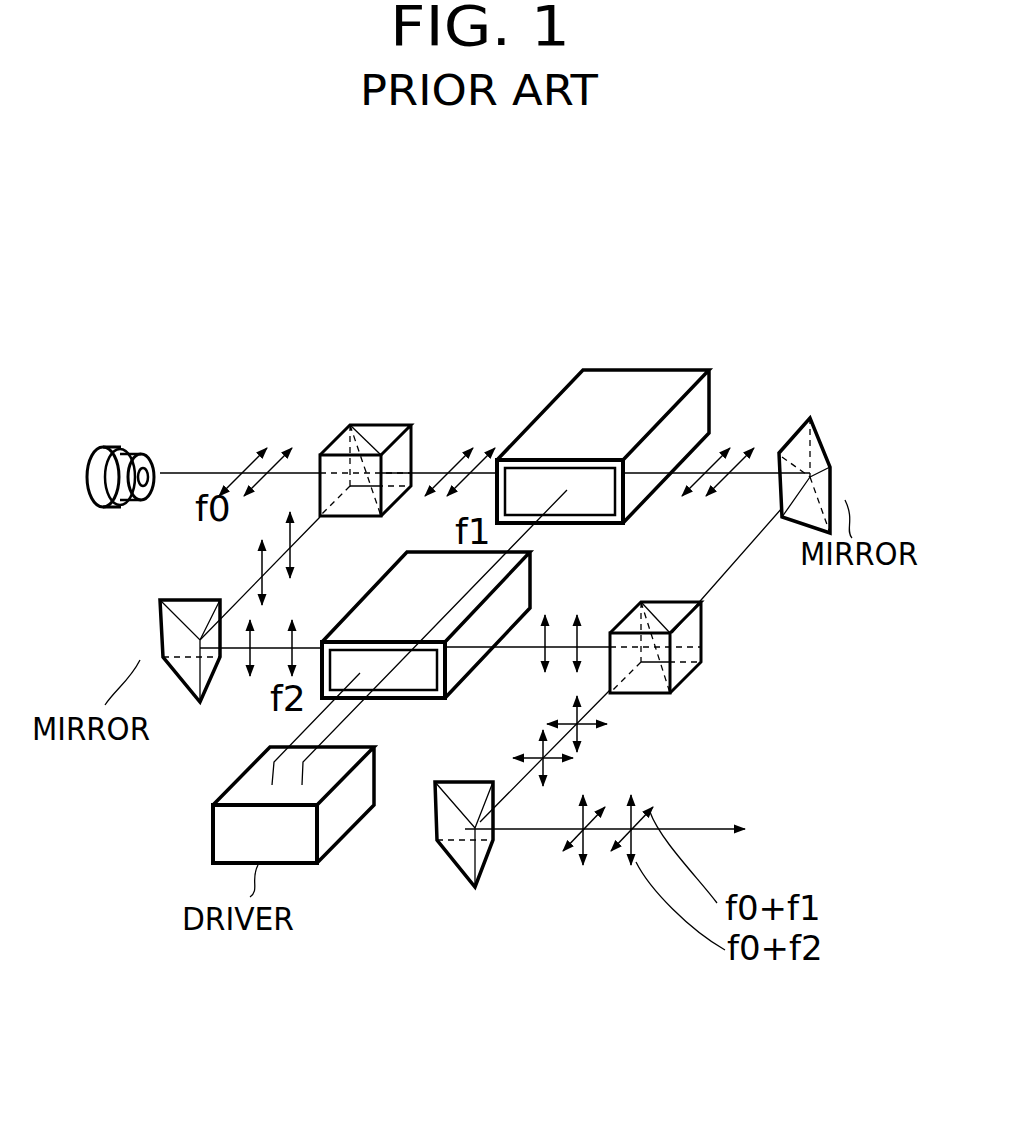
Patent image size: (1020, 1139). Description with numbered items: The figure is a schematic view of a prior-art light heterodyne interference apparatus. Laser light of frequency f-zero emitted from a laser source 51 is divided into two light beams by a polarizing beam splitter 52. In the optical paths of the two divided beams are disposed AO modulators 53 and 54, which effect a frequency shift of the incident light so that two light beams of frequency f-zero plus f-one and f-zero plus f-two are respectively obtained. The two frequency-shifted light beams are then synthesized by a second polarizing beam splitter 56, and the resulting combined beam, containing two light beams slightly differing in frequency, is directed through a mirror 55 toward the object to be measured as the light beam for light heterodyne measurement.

The laser source 51 is at (95, 445).
The polarizing beam splitter 52 is at (328, 455).
The AO modulator 53 is at (562, 388).
The AO modulator 54 is at (510, 605).
The mirror 55 is at (445, 860).
The polarizing beam splitter 56 is at (705, 635).